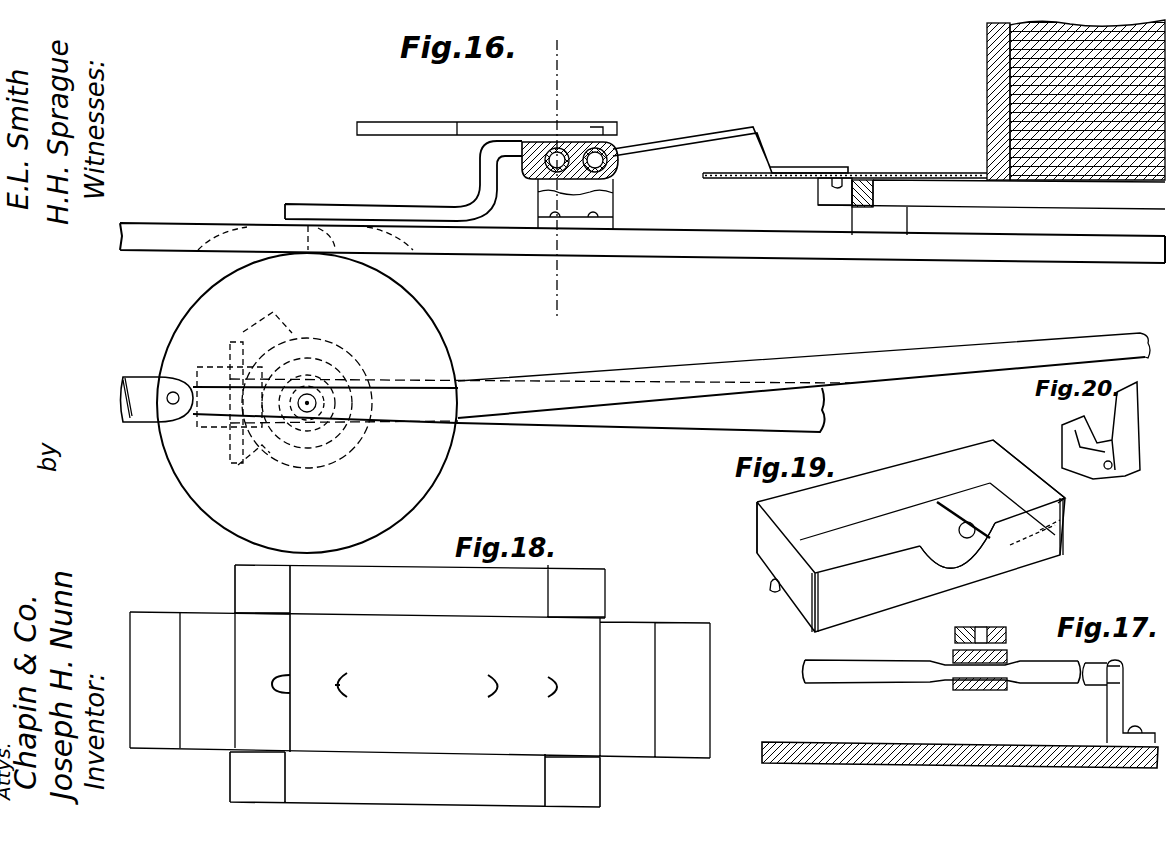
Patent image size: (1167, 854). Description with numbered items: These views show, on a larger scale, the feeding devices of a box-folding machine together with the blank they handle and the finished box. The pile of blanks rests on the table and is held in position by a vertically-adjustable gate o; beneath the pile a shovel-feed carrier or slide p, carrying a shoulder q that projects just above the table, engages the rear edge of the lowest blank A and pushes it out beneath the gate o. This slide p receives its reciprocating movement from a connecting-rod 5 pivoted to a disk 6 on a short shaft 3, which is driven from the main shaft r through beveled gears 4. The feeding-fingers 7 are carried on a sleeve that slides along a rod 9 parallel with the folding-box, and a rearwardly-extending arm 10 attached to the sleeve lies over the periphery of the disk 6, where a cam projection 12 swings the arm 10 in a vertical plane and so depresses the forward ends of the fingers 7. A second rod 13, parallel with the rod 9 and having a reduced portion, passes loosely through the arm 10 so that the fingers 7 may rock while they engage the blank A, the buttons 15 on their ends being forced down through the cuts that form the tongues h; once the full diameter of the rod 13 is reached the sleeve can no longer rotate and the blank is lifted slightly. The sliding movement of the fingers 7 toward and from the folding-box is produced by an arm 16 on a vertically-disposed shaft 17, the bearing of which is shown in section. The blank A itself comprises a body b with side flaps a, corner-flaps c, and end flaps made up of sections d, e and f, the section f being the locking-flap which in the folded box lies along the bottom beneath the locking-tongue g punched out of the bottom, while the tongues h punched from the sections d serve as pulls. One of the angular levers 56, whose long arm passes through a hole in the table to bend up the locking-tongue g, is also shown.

In FIG. 16, the short shaft 3 is at (313, 398).
In FIG. 16, the beveled gears 4 is at (284, 322).
In FIG. 16, the connecting-rod 5 is at (776, 365).
In FIG. 16, the disk 6 is at (428, 333).
In FIG. 16, the feeding-fingers 7 is at (653, 137).
In FIG. 16, the rod 9 is at (597, 155).
In FIG. 16, the rearwardly-extending arm 10 is at (368, 192).
In FIG. 16, the cam projection 12 is at (318, 220).
In FIG. 16, the second rod 13 is at (548, 162).
In FIG. 17, the second rod 13 is at (960, 679).
In FIG. 16, the buttons 15 is at (834, 184).
In FIG. 16, the arm 16 is at (397, 120).
In FIG. 17, the arm 16 is at (964, 626).
In FIG. 16, the vertically-disposed shaft 17 is at (556, 186).
In FIG. 20, the angular levers 56 is at (1128, 458).
In FIG. 16, the blank A is at (722, 168).
In FIG. 18, the blank A is at (496, 683).
In FIG. 18, the side flaps a is at (420, 591).
In FIG. 19, the side flaps a is at (888, 598).
In FIG. 18, the body b is at (420, 685).
In FIG. 18, the corner-flaps c is at (233, 590).
In FIG. 18, the end flap section d is at (248, 680).
In FIG. 19, the end flap section d is at (755, 552).
In FIG. 18, the end flap section e is at (195, 680).
In FIG. 19, the end flap section e is at (1003, 470).
In FIG. 18, the locking-flap f is at (144, 680).
In FIG. 19, the locking-flap f is at (972, 505).
In FIG. 18, the locking-tongue g is at (354, 688).
In FIG. 19, the locking-tongue g is at (1002, 536).
In FIG. 19, the tongue h is at (772, 594).
In FIG. 16, the vertically-adjustable gate o is at (983, 52).
In FIG. 16, the carrier or slide p is at (1035, 193).
In FIG. 18, the carrier or slide p is at (285, 683).
In FIG. 16, the shoulder q is at (978, 172).
In FIG. 16, the shaft r is at (620, 430).